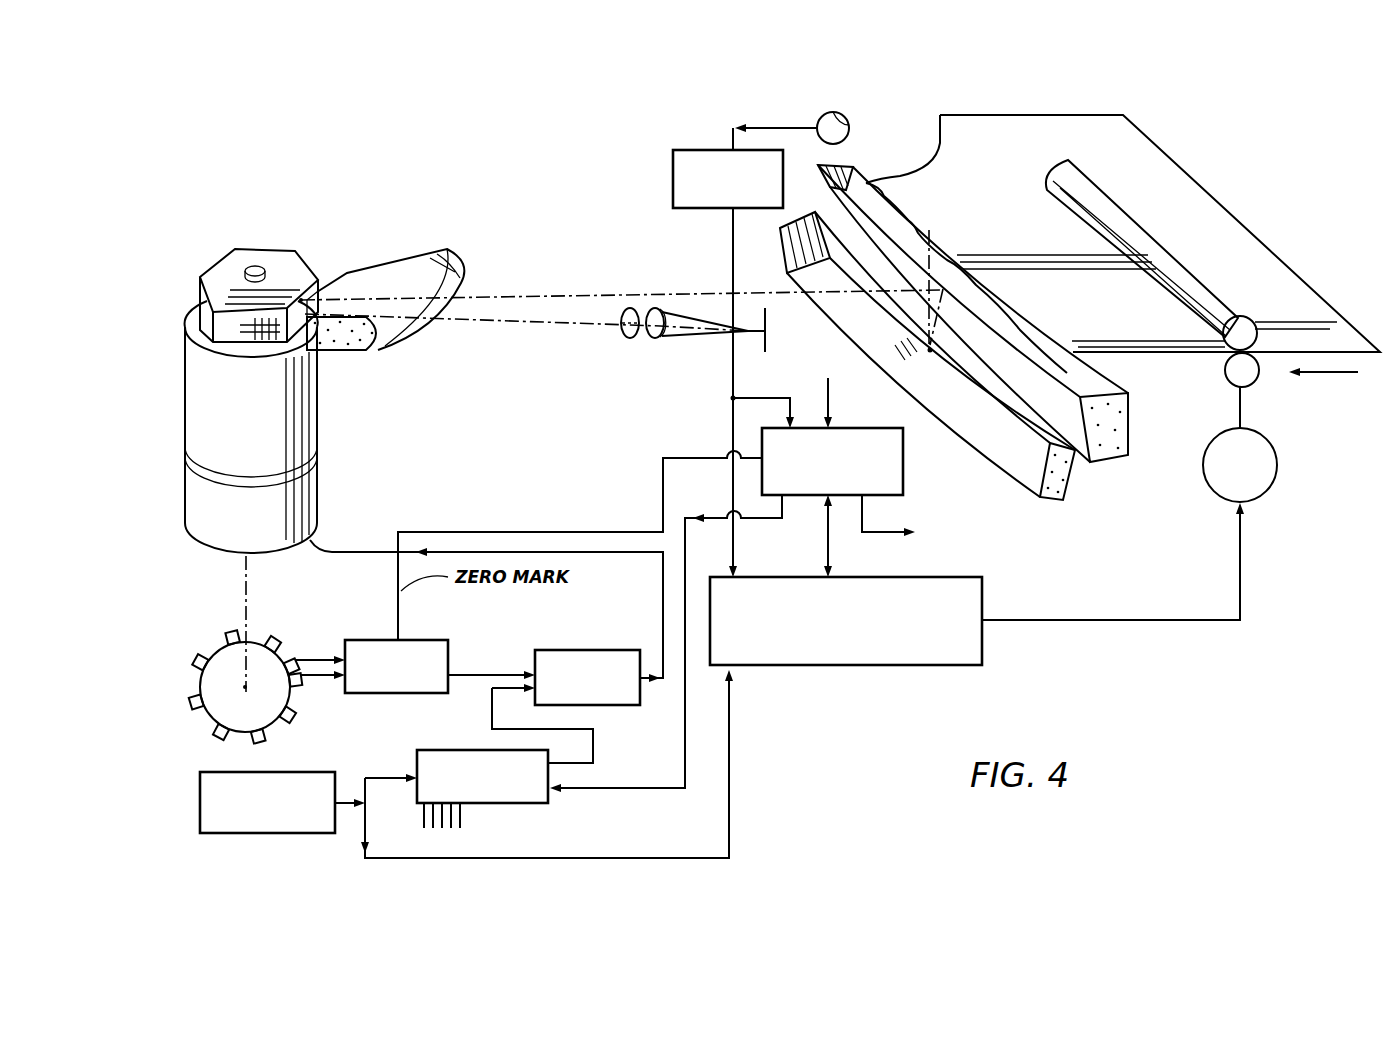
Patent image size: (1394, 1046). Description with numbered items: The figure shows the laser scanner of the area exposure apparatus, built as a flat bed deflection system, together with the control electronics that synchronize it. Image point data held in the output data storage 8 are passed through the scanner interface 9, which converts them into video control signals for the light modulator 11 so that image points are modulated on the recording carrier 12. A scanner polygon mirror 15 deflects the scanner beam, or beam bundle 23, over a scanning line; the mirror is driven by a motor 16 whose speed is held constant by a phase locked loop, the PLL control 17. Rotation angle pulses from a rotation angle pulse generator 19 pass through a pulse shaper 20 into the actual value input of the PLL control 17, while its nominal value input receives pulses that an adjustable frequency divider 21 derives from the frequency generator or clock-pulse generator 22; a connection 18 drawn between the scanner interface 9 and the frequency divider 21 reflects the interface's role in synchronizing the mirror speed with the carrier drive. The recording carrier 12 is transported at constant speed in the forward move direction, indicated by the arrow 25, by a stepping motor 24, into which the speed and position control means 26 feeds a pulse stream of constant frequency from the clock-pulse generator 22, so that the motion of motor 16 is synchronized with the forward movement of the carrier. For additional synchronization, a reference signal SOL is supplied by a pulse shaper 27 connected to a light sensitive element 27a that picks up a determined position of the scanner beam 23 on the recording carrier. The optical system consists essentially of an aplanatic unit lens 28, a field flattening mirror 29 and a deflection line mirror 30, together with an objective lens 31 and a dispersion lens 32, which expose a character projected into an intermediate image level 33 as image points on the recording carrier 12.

The scanner polygon mirror 15 is at (318, 282).
The motor 16 is at (320, 495).
The aplanatic unit lens 28 is at (358, 343).
The scanner beam 23 is at (574, 291).
The objective lens 31 is at (625, 338).
The dispersion lens 32 is at (656, 340).
The intermediate image level 33 is at (765, 352).
The pulse shaper 27 is at (676, 180).
The light sensitive element 27a is at (850, 121).
The scanner interface 9 is at (904, 486).
The output data storage 8 is at (855, 403).
The light modulator 11 is at (922, 519).
The control line 18 is at (650, 788).
The rotation angle pulse generator 19 is at (253, 655).
The pulse shaper 20 is at (449, 661).
The PLL control 17 is at (636, 651).
The adjustable frequency divider 21 is at (450, 751).
The frequency generator 22 is at (308, 772).
The speed and position control means 26 is at (912, 665).
The stepping motor 24 is at (1273, 454).
The transport direction arrow 25 is at (1326, 374).
The recording carrier 12 is at (1197, 195).
The field flattening mirror 29 is at (1071, 485).
The deflection line mirror 30 is at (1110, 438).